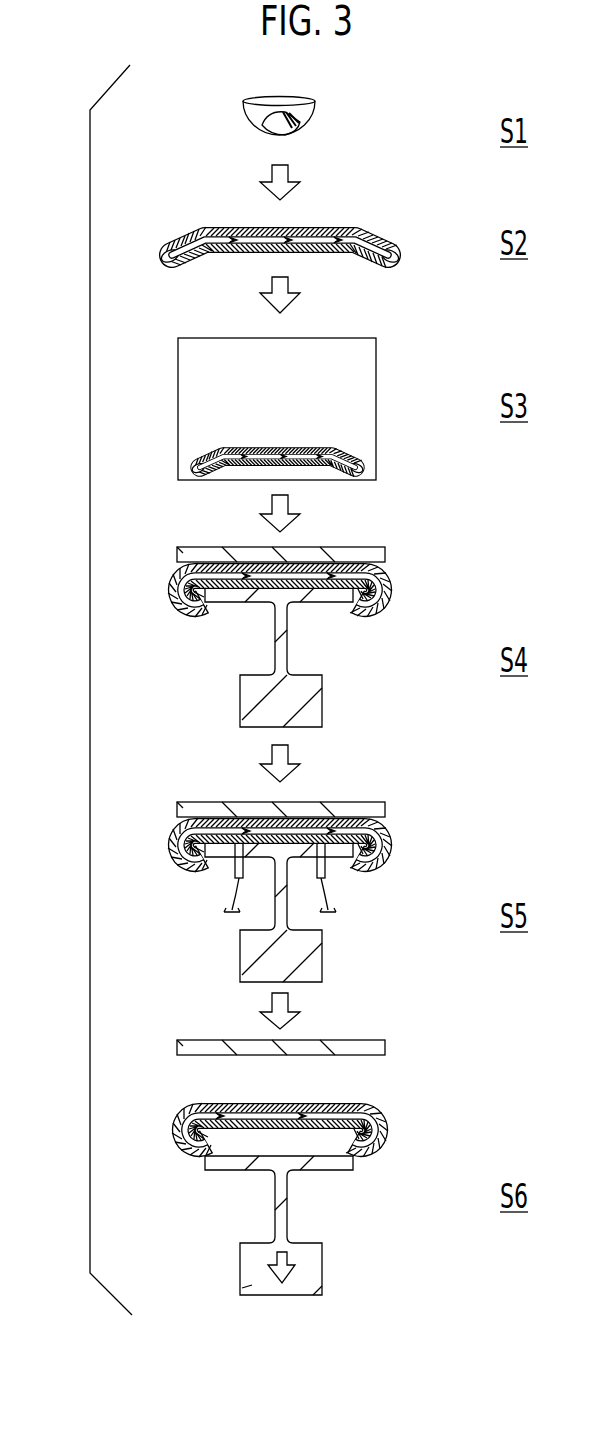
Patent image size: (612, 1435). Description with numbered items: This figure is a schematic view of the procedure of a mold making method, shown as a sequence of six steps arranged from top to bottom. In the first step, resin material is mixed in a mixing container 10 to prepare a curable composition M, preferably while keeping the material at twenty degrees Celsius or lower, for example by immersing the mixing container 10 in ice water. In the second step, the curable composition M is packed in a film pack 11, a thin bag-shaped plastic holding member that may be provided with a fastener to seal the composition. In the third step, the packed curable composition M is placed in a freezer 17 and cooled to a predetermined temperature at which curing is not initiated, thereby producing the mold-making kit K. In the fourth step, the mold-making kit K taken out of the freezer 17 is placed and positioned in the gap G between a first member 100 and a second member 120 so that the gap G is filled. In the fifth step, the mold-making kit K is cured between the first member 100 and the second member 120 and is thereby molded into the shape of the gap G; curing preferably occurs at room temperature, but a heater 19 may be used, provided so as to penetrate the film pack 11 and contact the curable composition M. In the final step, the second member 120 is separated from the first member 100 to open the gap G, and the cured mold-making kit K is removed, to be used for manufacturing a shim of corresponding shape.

The mixing container 10 is at (305, 111).
The curable composition M is at (283, 133).
The film pack 11 is at (401, 248).
The mold-making kit K is at (316, 637).
The freezer 17 is at (355, 378).
The first member 100 is at (377, 557).
The gap G is at (185, 565).
The second member 120 is at (315, 705).
The heater 19 is at (232, 872).